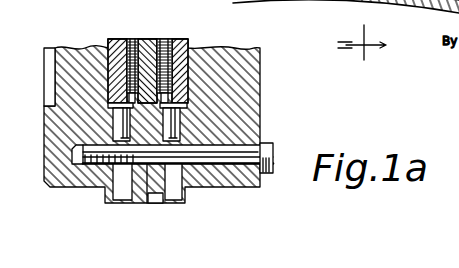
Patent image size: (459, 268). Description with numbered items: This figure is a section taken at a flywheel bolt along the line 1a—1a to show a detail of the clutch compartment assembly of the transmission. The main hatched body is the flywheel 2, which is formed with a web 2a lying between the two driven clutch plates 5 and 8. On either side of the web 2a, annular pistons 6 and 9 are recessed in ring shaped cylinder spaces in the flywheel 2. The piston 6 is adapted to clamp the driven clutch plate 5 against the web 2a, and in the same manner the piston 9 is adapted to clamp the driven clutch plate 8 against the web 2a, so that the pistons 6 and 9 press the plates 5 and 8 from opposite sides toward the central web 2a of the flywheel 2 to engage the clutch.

The flywheel 2 is at (52, 187).
The web 2a is at (153, 197).
The driven clutch plate 5 is at (133, 38).
The annular piston 6 is at (116, 42).
The driven clutch plate 8 is at (163, 39).
The annular piston 9 is at (183, 38).
The section line 1a is at (377, 42).